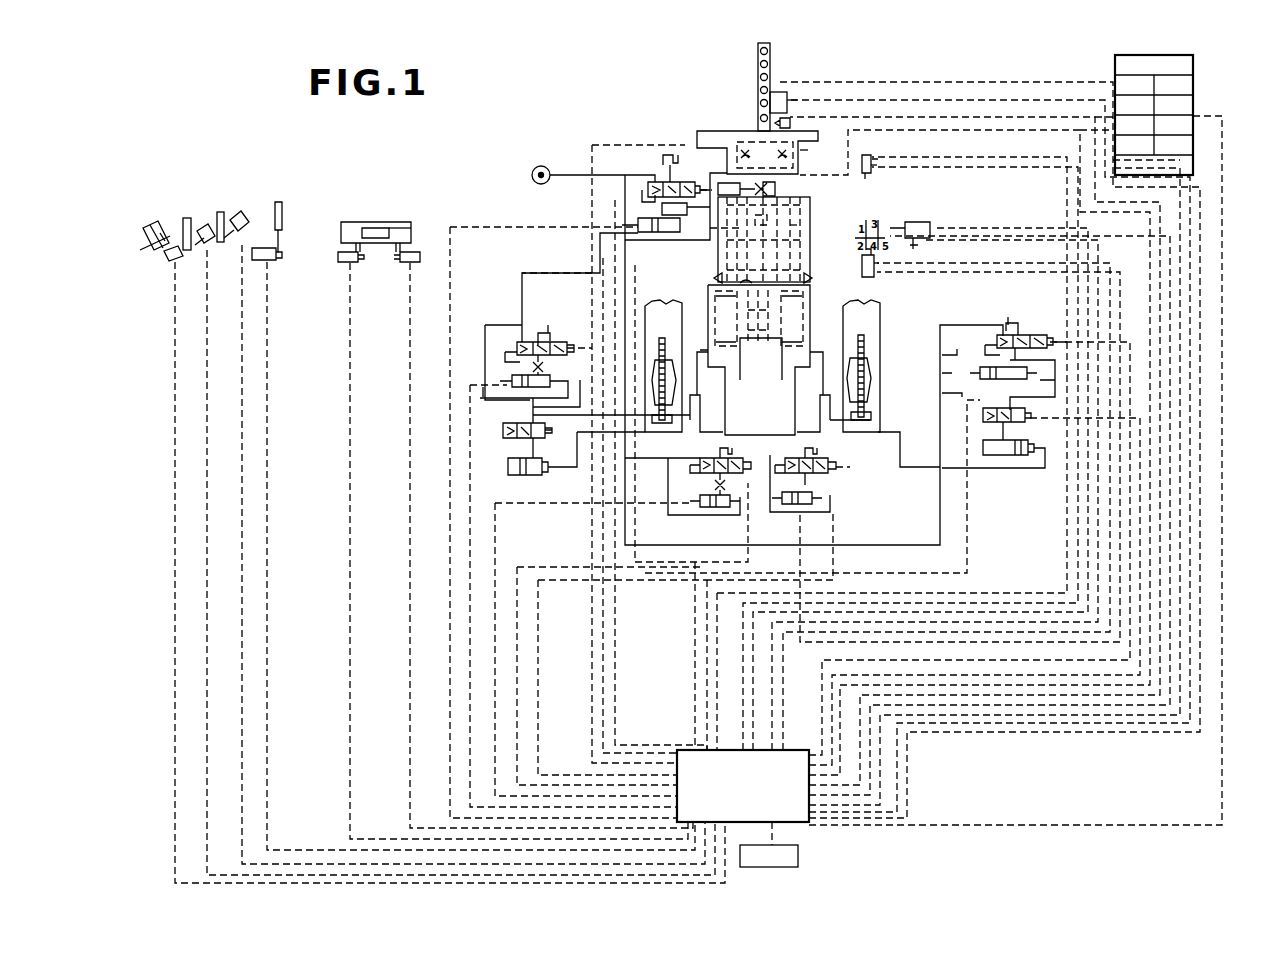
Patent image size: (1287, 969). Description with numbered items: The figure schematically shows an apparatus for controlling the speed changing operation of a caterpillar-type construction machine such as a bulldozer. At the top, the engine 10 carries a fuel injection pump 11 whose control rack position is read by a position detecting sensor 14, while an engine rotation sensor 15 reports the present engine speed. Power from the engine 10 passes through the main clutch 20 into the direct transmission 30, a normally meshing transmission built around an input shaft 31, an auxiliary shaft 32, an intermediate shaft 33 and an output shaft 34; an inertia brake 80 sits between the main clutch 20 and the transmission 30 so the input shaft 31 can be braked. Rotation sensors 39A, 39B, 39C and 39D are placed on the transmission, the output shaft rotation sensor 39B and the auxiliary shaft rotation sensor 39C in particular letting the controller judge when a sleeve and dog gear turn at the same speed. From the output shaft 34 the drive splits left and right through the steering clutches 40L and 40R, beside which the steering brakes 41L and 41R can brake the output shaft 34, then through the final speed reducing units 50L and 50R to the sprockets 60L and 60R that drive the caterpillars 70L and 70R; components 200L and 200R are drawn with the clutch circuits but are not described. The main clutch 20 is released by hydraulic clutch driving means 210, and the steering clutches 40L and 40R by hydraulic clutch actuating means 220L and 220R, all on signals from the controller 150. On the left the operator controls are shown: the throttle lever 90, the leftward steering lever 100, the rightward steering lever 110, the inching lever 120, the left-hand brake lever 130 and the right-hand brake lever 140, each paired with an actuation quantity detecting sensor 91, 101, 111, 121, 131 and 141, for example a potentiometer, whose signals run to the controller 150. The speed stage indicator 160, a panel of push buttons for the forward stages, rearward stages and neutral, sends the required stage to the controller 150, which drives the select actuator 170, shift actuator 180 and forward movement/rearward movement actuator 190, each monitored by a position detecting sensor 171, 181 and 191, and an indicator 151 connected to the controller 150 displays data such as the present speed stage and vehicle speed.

The engine 10 is at (772, 55).
The fuel injection pump 11 is at (790, 98).
The position detecting sensor 14 is at (779, 92).
The engine rotation sensor 15 is at (791, 123).
The main clutch 20 is at (752, 148).
The direct transmission 30 is at (810, 204).
The input shaft 31 is at (770, 213).
The auxiliary shaft 32 is at (713, 231).
The intermediate shaft 33 is at (800, 228).
The output shaft 34 is at (766, 340).
The speed sensor 39A is at (823, 151).
The output shaft rotation sensor 39B is at (740, 285).
The auxiliary shaft rotation sensor 39C is at (716, 276).
The speed sensor 39D is at (808, 282).
The leftward steering clutch 40L is at (714, 318).
The rightward steering clutch 40R is at (818, 318).
The steering brake 41L is at (730, 352).
The steering brake 41R is at (793, 352).
The final speed reducing unit 50L is at (709, 474).
The final speed reducing unit 50R is at (820, 445).
The sprocket 60L is at (659, 345).
The sprocket 60R is at (864, 345).
The caterpillar 70L is at (655, 318).
The caterpillar 70R is at (872, 332).
The inertia brake 80 is at (722, 183).
The throttle lever 90 is at (153, 230).
The actuation quantity detecting sensor 91 is at (178, 258).
The leftward steering lever 100 is at (185, 216).
The actuation quantity detecting sensor 101 is at (203, 230).
The rightward steering lever 110 is at (220, 211).
The actuation quantity detecting sensor 111 is at (242, 210).
The inching lever 120 is at (283, 210).
The actuation quantity detecting sensor 121 is at (268, 260).
The left-hand brake lever 130 is at (352, 222).
The actuation quantity detecting sensor 131 is at (345, 263).
The right-hand brake lever 140 is at (394, 222).
The actuation quantity detecting sensor 141 is at (410, 263).
The controller 150 is at (790, 756).
The indicator 151 is at (798, 855).
The speed stage indicator 160 is at (1215, 96).
The select actuator 170 is at (922, 226).
The position detecting sensor 171 is at (918, 244).
The shift actuator 180 is at (874, 258).
The position detecting sensor 181 is at (876, 270).
The forward movement/rearward movement actuator 190 is at (872, 158).
The position detecting sensor 191 is at (876, 168).
The left brake cylinder 200L is at (708, 508).
The right brake cylinder 200R is at (815, 508).
The hydraulic clutch driving means 210 is at (643, 167).
The hydraulic clutch actuating means 220L is at (502, 335).
The hydraulic clutch actuating means 220R is at (1030, 340).